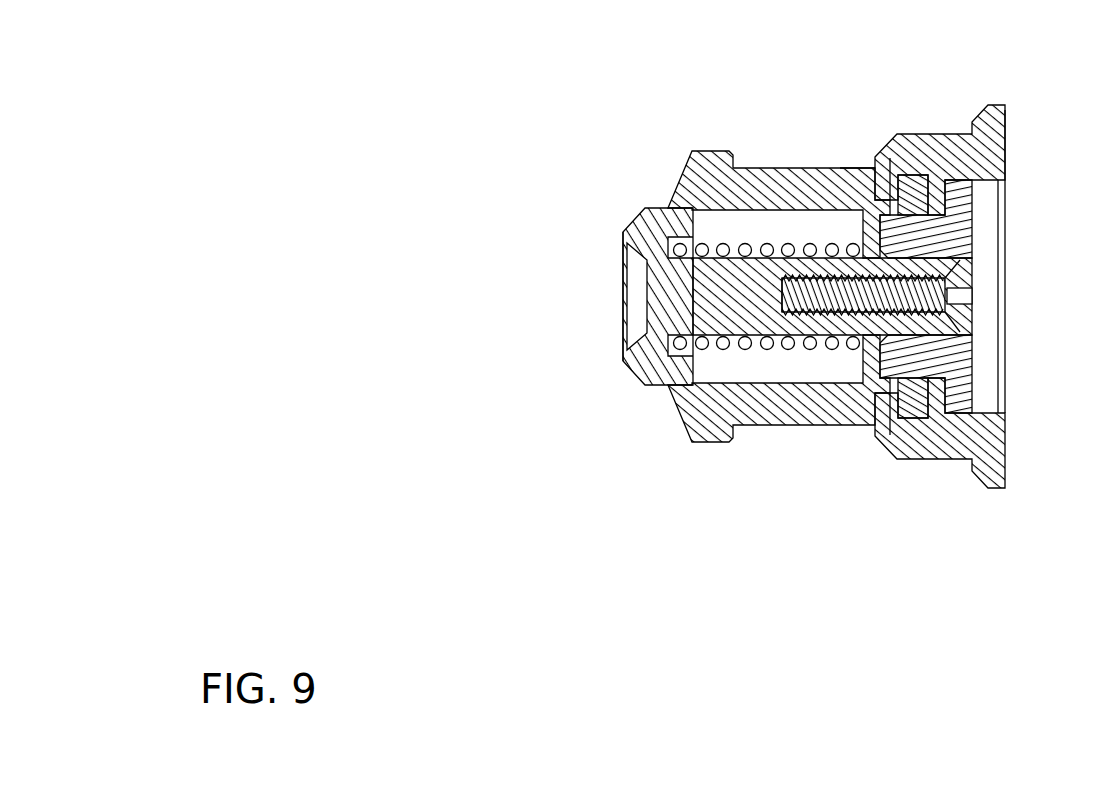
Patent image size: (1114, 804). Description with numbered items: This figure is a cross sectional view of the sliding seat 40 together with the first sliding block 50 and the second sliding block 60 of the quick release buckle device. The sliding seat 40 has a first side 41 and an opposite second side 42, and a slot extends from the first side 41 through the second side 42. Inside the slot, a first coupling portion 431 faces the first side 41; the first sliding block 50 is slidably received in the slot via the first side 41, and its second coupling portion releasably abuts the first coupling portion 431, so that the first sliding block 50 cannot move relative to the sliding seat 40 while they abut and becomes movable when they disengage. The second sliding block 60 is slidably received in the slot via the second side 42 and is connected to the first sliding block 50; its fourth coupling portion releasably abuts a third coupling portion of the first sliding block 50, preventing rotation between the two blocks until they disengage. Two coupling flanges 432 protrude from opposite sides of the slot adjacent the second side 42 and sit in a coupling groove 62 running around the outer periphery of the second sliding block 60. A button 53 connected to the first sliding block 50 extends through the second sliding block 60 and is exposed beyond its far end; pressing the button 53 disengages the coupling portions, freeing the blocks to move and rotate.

The sliding seat 40 is at (933, 112).
The first side 41 is at (1008, 138).
The second side 42 is at (856, 152).
The first coupling portion 431 is at (947, 212).
The coupling flanges 432 is at (872, 212).
The first sliding block 50 is at (992, 358).
The button 53 is at (618, 198).
The second sliding block 60 is at (710, 418).
The coupling groove 62 is at (876, 156).